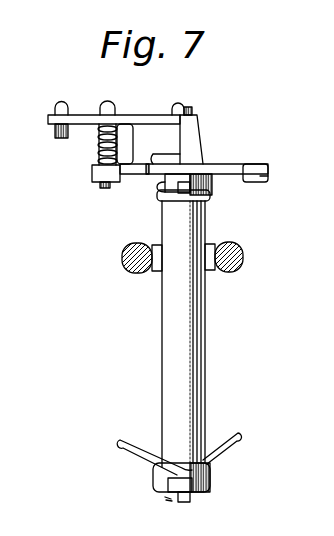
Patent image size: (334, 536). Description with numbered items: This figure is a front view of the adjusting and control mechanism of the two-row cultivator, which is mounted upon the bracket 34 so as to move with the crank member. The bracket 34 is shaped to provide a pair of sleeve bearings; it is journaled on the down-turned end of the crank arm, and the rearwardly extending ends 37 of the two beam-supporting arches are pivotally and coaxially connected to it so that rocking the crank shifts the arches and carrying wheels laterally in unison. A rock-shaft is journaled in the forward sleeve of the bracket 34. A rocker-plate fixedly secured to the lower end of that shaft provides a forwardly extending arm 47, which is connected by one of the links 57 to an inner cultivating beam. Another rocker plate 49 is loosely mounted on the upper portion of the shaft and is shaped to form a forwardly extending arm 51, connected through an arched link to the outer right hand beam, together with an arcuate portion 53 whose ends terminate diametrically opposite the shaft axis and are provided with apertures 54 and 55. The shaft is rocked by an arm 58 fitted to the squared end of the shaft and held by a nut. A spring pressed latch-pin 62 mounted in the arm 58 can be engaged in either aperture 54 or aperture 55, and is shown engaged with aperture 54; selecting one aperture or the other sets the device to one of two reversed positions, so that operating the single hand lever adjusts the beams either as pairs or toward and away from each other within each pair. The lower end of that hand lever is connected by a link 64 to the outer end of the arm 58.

The bracket 34 is at (205, 348).
The rearwardly extending ends 37 is at (122, 261).
The forwardly extending arm 47 is at (198, 494).
The rocker plate 49 is at (212, 164).
The forwardly extending arm 51 is at (175, 172).
The arcuate portion 53 is at (240, 164).
The aperture 54 is at (92, 178).
The aperture 55 is at (268, 176).
The links 57 is at (132, 437).
The arm 58 is at (86, 115).
The spring pressed latch-pin 62 is at (97, 155).
The link 64 is at (54, 108).